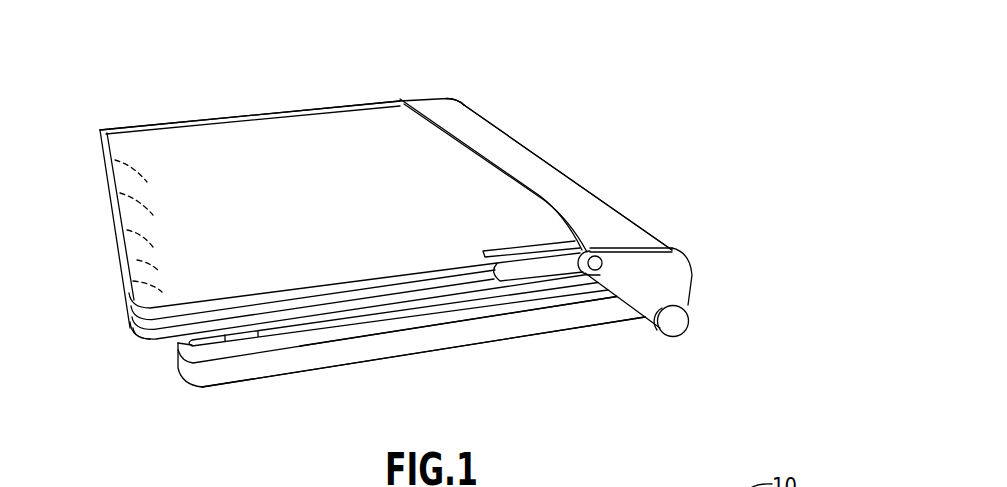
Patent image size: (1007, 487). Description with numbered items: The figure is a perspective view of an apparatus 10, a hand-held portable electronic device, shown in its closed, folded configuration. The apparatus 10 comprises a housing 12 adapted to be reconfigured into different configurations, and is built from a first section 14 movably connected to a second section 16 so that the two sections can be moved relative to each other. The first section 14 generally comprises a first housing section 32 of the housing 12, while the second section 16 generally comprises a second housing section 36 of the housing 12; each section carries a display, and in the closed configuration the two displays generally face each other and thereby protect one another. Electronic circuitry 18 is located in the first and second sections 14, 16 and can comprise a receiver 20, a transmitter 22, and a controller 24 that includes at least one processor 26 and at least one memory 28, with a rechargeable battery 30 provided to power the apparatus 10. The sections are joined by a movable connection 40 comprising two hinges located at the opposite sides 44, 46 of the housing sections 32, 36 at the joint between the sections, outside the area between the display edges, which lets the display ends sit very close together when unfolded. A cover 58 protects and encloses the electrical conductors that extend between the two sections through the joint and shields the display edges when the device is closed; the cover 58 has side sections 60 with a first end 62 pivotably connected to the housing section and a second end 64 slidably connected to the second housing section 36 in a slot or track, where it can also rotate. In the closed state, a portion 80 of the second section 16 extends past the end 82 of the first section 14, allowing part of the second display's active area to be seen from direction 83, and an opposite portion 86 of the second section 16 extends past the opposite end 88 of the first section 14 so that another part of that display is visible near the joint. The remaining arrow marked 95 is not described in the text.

The apparatus 10 is at (616, 59).
The housing 12 is at (200, 138).
The first section 14 is at (245, 380).
The second section 16 is at (267, 128).
The electronic circuitry 18 is at (362, 150).
The receiver 20 is at (110, 158).
The transmitter 22 is at (112, 196).
The controller 24 is at (115, 235).
The processor 26 is at (125, 262).
The memory 28 is at (133, 281).
The rechargeable battery 30 is at (420, 356).
The first housing section 32 is at (320, 368).
The second housing section 36 is at (127, 124).
The connection 40 is at (593, 197).
The side 44 is at (477, 284).
The side 46 is at (240, 115).
The cover 58 is at (542, 173).
The side section 60 is at (668, 276).
The first end 62 is at (674, 318).
The second end 64 is at (597, 256).
The portion 80 is at (133, 333).
The end 82 is at (178, 353).
The direction 83 is at (113, 435).
The opposite portion 86 is at (480, 143).
The opposite end 88 is at (648, 300).
The rotation arrow 95 is at (685, 377).